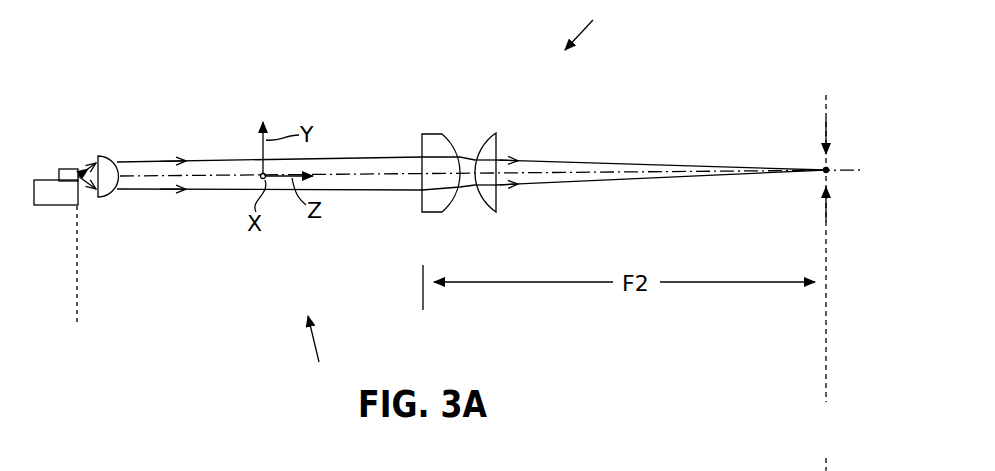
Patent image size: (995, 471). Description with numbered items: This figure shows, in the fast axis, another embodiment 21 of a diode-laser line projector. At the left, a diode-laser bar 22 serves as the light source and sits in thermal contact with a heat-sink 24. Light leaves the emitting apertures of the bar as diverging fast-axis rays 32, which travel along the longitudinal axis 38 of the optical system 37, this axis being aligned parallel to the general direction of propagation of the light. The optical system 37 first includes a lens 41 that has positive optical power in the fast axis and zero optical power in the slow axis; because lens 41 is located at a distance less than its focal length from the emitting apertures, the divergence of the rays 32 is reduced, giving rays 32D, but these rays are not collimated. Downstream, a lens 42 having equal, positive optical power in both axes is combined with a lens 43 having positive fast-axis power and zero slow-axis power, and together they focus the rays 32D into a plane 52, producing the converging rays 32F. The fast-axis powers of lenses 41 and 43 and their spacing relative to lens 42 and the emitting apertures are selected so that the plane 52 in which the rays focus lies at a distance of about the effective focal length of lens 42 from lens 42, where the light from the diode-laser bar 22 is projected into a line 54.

The line-projector embodiment 21 is at (595, 28).
The diode-laser bar 22 is at (70, 168).
The heat-sink 24 is at (63, 207).
The fast-axis rays 32 is at (84, 157).
The reduced-divergence rays 32D is at (212, 158).
The focused rays 32F is at (543, 160).
The optical system 37 is at (321, 353).
The longitudinal axis 38 is at (617, 173).
The lens 41 is at (106, 156).
The lens 42 is at (451, 206).
The lens 43 is at (492, 197).
The focal plane 52 is at (826, 337).
The line 54 is at (823, 167).